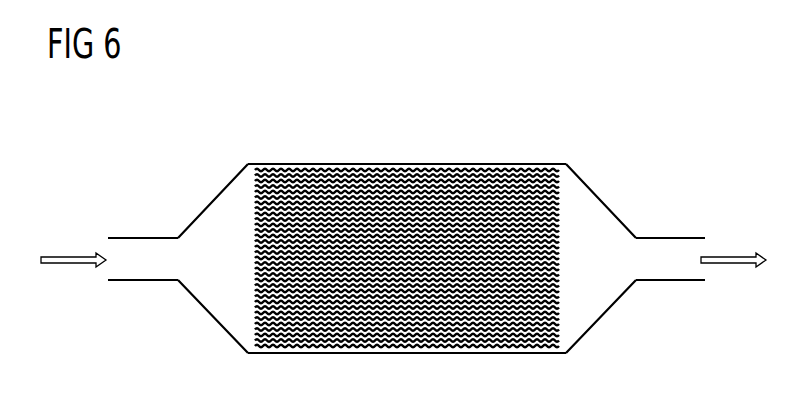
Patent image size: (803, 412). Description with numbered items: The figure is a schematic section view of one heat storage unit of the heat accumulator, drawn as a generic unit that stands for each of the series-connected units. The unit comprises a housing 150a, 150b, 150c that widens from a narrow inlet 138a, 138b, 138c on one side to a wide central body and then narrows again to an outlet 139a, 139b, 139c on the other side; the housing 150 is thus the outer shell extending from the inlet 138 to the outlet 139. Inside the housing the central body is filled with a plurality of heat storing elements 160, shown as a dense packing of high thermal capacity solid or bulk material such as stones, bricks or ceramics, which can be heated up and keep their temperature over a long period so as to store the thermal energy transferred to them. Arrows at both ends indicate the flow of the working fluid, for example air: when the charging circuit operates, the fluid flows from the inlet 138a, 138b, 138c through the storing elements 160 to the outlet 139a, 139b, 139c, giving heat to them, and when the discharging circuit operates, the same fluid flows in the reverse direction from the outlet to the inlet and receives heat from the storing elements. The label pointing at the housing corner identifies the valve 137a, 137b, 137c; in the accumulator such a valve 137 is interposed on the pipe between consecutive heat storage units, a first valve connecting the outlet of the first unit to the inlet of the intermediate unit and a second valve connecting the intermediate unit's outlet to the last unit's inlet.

The filter unit 137 is at (407, 219).
The first valve 137a is at (407, 219).
The second valve 137b is at (407, 219).
The filter unit 137c is at (330, 110).
The inlet pipe 138 is at (134, 220).
The inlet 138a is at (134, 220).
The inlet 138b is at (134, 220).
The inlet 138c is at (136, 230).
The outlet pipe 139 is at (674, 219).
The outlet 139a is at (674, 219).
The outlet 139b is at (674, 219).
The outlet 139c is at (660, 230).
The housing 150 is at (412, 233).
The housing 150a is at (412, 233).
The housing 150b is at (412, 233).
The housing 150c is at (478, 132).
The heat storing elements 160 is at (400, 325).